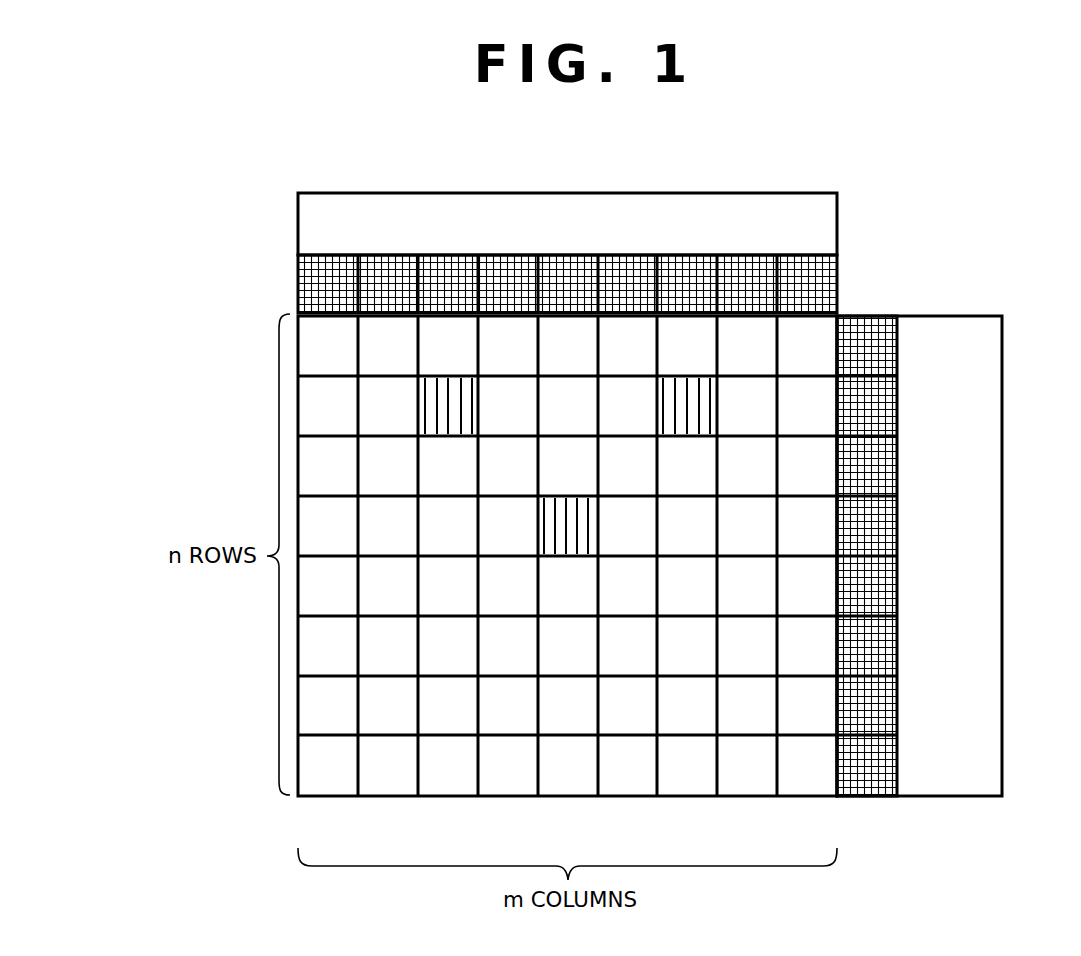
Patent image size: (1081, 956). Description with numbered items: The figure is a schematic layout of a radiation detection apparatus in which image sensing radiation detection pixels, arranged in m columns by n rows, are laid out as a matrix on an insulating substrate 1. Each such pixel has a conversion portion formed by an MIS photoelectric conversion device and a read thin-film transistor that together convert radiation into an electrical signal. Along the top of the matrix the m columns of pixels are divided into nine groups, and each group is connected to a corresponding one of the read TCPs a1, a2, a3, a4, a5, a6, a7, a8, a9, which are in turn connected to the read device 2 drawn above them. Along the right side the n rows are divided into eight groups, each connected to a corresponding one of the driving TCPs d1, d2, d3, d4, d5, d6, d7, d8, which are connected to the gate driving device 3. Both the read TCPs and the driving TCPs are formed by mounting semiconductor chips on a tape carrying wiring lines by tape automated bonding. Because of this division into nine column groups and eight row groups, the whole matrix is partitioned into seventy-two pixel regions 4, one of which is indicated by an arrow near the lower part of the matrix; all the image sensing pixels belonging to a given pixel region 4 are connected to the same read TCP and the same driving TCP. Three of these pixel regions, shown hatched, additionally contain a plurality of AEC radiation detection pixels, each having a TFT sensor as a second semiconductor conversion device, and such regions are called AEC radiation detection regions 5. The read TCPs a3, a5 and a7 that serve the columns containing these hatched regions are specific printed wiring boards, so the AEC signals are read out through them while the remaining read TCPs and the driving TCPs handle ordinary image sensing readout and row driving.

The insulating substrate 1 is at (378, 796).
The read device 2 is at (838, 216).
The gate driving device 3 is at (1003, 592).
The pixel region 4 is at (690, 775).
The AEC radiation detection region 5 is at (571, 545).
The read TCP a1 is at (333, 270).
The read TCP a2 is at (393, 270).
The read TCP a3 is at (448, 270).
The read TCP a4 is at (512, 298).
The read TCP a5 is at (574, 298).
The read TCP a6 is at (633, 298).
The read TCP a7 is at (697, 270).
The read TCP a8 is at (750, 270).
The read TCP a9 is at (805, 270).
The driving TCP d1 is at (880, 342).
The driving TCP d2 is at (880, 403).
The driving TCP d3 is at (880, 457).
The driving TCP d4 is at (880, 512).
The driving TCP d5 is at (855, 596).
The driving TCP d6 is at (880, 655).
The driving TCP d7 is at (880, 711).
The driving TCP d8 is at (880, 767).